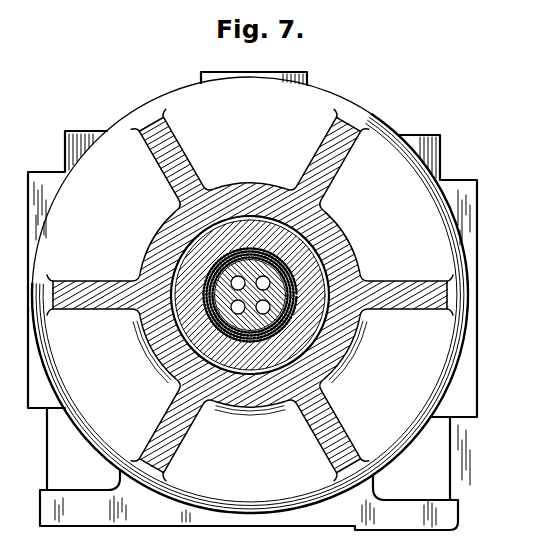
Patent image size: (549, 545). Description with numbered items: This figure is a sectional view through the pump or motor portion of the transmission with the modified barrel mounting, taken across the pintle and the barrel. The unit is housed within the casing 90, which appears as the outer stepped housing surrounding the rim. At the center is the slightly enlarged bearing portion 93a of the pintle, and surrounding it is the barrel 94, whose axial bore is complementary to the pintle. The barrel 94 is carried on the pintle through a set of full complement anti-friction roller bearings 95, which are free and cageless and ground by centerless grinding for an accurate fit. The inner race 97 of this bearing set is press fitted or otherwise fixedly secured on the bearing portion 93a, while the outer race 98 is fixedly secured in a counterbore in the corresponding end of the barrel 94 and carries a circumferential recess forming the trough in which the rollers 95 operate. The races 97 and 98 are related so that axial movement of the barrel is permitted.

The casing 90 is at (456, 366).
The bearing portion 93a is at (195, 318).
The barrel 94 is at (300, 253).
The anti-friction roller bearings 95 is at (320, 282).
The inner race 97 is at (292, 268).
The outer race 98 is at (305, 273).